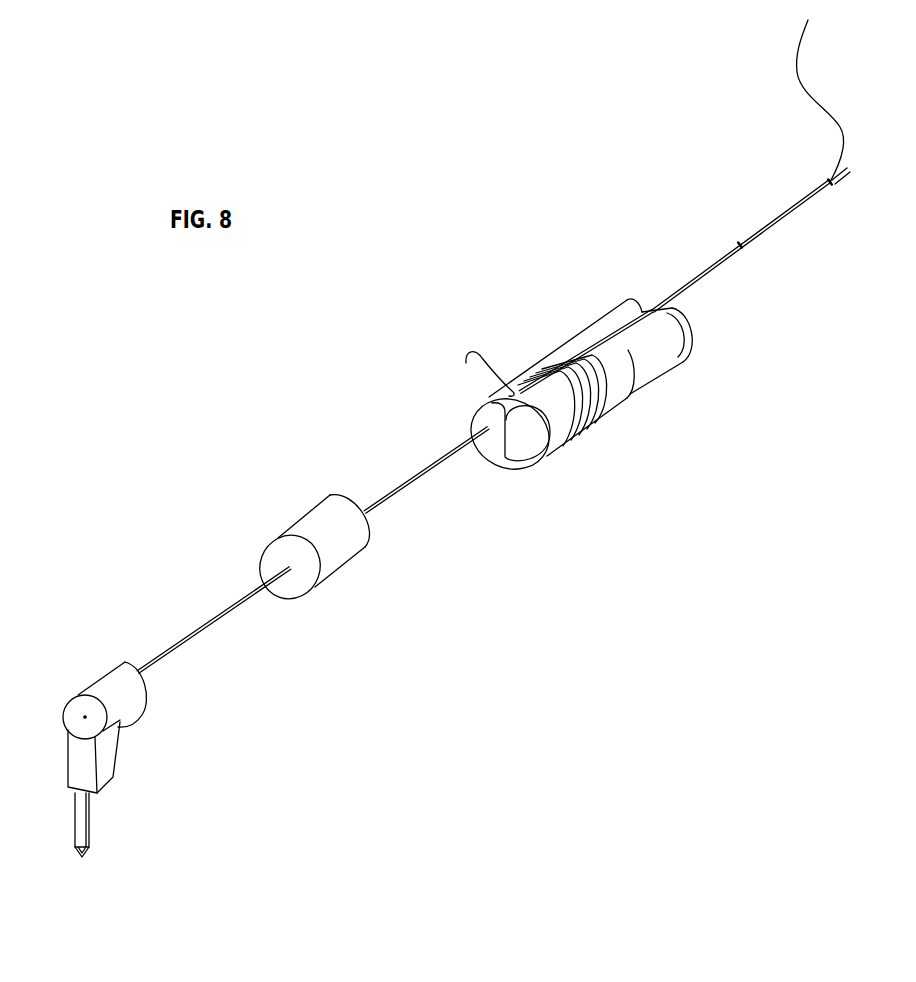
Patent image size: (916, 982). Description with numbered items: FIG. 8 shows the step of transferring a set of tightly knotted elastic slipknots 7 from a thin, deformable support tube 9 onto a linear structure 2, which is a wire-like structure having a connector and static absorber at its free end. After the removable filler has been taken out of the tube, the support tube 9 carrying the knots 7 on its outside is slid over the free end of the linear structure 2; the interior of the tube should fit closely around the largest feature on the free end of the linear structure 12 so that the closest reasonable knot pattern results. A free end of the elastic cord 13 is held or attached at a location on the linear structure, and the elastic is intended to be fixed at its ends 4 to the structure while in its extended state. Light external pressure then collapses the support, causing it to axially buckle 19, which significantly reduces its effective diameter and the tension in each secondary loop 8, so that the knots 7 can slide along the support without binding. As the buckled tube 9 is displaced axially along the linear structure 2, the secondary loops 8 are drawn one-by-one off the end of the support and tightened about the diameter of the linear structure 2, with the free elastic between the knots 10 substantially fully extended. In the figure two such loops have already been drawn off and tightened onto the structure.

The linear structure 2 is at (193, 643).
The ends of the elastic cord 4 is at (795, 154).
The tightly knotted elastic slipknots 7 is at (588, 343).
The secondary loops 8 is at (630, 402).
The thin deformable support tube 9 is at (655, 385).
The free elastic between the knots 10 is at (780, 210).
The largest feature on the free end of the linear structure 12 is at (342, 550).
The free end of the elastic cord 13 is at (840, 128).
The collapsed (axially buckled) tubular support 19 is at (517, 445).